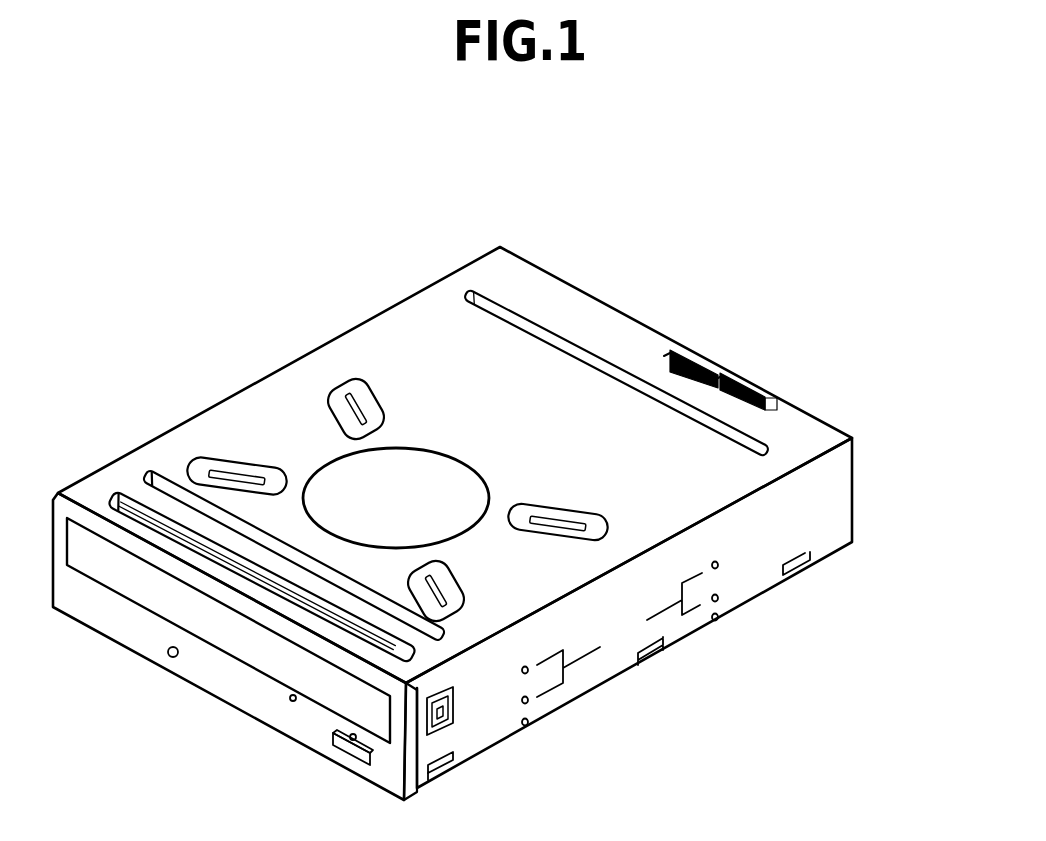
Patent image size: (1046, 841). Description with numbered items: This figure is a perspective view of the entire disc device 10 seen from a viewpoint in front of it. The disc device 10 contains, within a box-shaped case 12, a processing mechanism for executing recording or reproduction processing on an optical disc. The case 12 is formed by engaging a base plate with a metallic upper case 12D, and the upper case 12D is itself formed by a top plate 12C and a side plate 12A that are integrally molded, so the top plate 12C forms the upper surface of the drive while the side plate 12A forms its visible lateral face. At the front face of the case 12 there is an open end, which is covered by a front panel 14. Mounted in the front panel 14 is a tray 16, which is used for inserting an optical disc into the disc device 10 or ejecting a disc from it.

The disc device 10 is at (508, 488).
The case 12 is at (511, 509).
The upper case 12D is at (298, 350).
The top plate 12C is at (250, 420).
The side plate 12A is at (833, 518).
The front panel 14 is at (235, 646).
The tray 16 is at (246, 672).